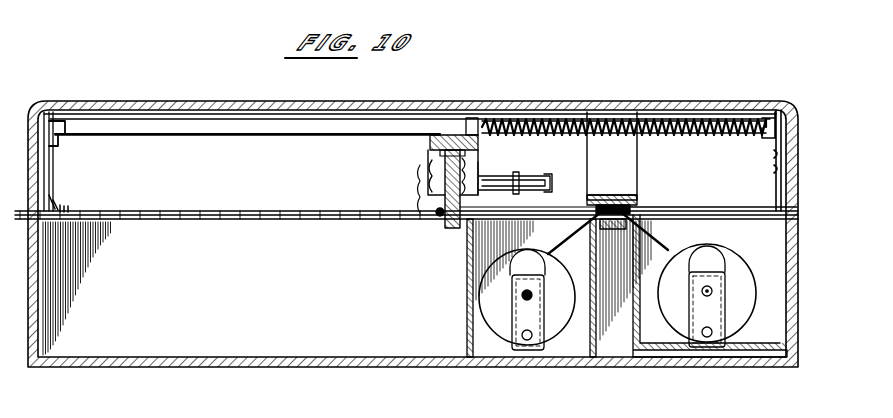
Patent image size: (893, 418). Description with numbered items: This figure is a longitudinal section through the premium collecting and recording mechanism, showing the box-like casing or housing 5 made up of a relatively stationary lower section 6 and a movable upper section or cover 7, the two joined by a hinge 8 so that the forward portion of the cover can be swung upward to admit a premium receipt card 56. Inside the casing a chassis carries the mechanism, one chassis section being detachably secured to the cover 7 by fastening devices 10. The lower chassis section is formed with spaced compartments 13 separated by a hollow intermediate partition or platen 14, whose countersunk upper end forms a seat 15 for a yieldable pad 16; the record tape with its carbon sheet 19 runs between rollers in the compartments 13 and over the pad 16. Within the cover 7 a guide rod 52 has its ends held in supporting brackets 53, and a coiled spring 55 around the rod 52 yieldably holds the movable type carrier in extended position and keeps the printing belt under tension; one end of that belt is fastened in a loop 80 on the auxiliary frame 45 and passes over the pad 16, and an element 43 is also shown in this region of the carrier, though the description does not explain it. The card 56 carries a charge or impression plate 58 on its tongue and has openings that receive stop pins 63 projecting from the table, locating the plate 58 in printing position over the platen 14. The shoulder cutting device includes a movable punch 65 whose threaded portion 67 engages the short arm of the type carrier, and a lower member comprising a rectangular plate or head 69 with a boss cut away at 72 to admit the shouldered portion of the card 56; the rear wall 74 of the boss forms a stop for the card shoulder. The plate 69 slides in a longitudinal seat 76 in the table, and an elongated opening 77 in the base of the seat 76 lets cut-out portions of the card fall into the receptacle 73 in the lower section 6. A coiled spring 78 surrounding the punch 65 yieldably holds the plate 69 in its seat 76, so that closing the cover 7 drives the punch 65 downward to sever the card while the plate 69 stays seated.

The box-like casing or housing 5 is at (494, 100).
The lower section 6 is at (42, 290).
The upper section or cover 7 is at (582, 103).
The hinge 8 is at (789, 206).
The fastening devices 10 is at (770, 166).
The compartments 13 is at (782, 312).
The intermediate partition or platen 14 is at (597, 325).
The seat 15 is at (547, 288).
The yieldable pad 16 is at (610, 202).
The carbon sheet 19 is at (665, 212).
The bracket 43 is at (440, 156).
The auxiliary frame 45 is at (567, 126).
The guide rod 52 is at (215, 133).
The supporting brackets 53 is at (62, 121).
The coiled spring 55 is at (690, 122).
The premium receipt card 56 is at (228, 208).
The charge or impression plate 58 is at (625, 207).
The stop pins 63 is at (58, 210).
The movable element or punch 65 is at (484, 190).
The threaded portion 67 is at (464, 135).
The rectangular plate or head 69 is at (445, 222).
The cut-away portion or slot 72 is at (438, 212).
The receptacle or compartment 73 is at (270, 335).
The rear wall 74 is at (456, 226).
The seat 76 is at (334, 221).
The elongated opening 77 is at (247, 221).
The coiled spring 78 is at (450, 138).
The loop 80 is at (586, 160).